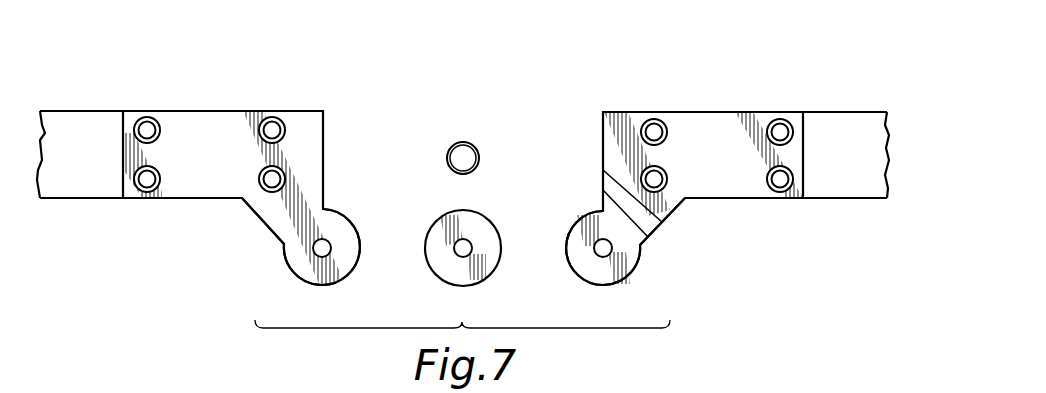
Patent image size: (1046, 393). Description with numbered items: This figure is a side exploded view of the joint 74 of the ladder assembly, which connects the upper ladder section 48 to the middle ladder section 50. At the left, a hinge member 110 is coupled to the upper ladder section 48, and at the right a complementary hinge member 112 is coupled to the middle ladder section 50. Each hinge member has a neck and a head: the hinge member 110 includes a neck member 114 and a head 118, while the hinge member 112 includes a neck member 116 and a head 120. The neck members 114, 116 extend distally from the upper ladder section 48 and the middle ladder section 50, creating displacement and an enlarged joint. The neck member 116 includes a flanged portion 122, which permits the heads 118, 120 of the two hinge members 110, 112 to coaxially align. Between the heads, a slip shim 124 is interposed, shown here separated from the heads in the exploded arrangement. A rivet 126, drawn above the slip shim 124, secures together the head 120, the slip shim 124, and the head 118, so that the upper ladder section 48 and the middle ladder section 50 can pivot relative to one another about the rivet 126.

The upper ladder section 48 is at (75, 110).
The middle ladder section 50 is at (851, 110).
The joint 74 is at (638, 74).
The hinge member 110 is at (230, 192).
The hinge member 112 is at (697, 205).
The neck member 114 is at (260, 222).
The neck member 116 is at (663, 222).
The head 118 is at (351, 223).
The head 120 is at (623, 277).
The flanged portion 122 is at (612, 190).
The slip shim 124 is at (483, 278).
The rivet 126 is at (463, 142).